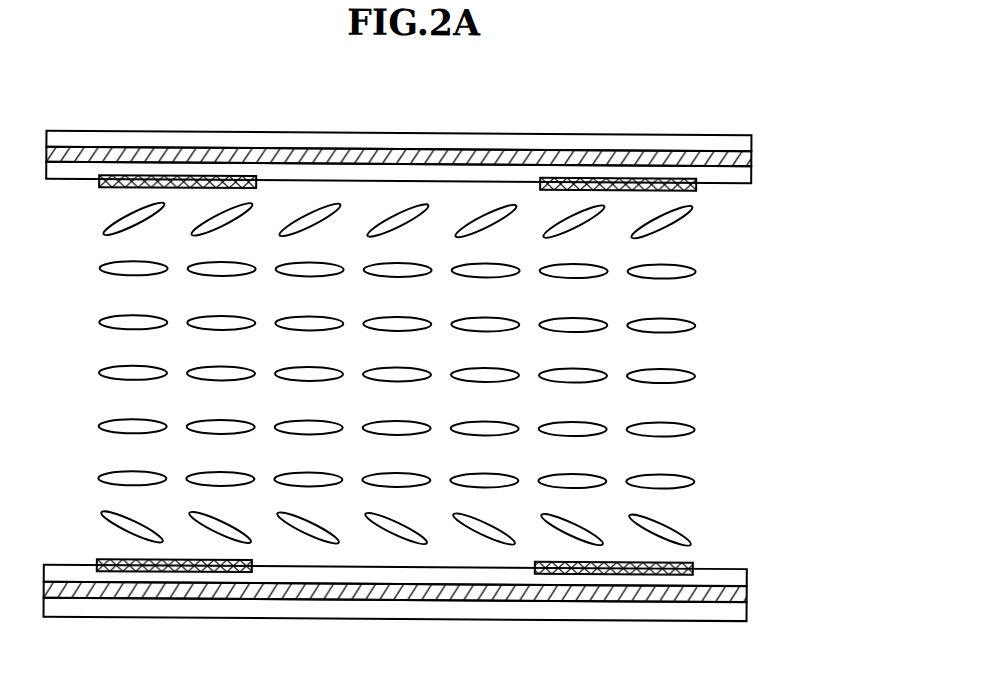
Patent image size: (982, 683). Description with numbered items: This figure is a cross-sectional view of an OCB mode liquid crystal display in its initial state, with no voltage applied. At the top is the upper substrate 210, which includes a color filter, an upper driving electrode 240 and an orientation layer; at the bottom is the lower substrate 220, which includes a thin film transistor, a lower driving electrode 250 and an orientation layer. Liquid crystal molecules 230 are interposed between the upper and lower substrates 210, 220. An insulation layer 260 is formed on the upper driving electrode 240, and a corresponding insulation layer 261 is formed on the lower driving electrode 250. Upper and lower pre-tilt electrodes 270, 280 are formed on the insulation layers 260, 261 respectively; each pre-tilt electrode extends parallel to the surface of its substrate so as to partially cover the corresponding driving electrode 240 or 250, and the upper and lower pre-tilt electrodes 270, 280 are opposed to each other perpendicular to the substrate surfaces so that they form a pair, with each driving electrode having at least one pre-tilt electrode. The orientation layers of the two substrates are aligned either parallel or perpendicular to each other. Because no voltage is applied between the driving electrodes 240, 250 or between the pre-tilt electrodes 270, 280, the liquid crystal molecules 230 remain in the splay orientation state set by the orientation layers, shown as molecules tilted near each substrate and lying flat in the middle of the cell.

The upper substrate 210 is at (750, 143).
The upper driving electrode 240 is at (750, 160).
The insulation layer 260 is at (750, 178).
The upper pre-tilt electrode 270 is at (620, 177).
The liquid crystal molecules 230 is at (760, 208).
The insulation layer 261 is at (748, 578).
The lower driving electrode 250 is at (748, 595).
The lower substrate 220 is at (748, 613).
The lower pre-tilt electrode 280 is at (612, 573).